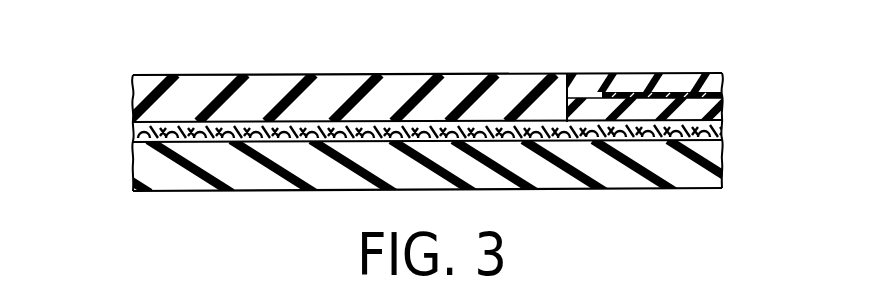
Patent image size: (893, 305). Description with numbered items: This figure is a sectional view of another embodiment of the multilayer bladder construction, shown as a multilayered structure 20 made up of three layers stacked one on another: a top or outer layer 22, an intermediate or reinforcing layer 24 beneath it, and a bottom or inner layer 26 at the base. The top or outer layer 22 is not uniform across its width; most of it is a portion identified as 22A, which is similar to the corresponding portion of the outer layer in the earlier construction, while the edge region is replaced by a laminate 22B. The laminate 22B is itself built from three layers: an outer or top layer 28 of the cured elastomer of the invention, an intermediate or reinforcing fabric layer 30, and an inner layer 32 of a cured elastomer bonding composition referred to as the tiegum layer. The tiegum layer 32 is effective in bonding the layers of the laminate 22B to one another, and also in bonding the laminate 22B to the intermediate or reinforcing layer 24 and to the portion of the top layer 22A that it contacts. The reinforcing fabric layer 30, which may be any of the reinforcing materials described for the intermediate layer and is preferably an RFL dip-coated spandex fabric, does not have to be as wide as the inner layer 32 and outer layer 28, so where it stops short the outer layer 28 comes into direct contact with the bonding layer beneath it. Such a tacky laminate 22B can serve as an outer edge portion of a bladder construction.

The multilayered structure 20 is at (781, 32).
The top or outer layer 22 is at (133, 98).
The portion of the top or outer layer 22A is at (350, 66).
The laminate 22B is at (640, 66).
The intermediate or reinforcing layer 24 is at (135, 134).
The bottom or inner layer 26 is at (135, 172).
The outer or top layer of cured elastomer 28 is at (722, 78).
The intermediate or reinforcing fabric layer 30 is at (722, 95).
The inner layer of cured elastomer bonding composition 32 is at (722, 108).